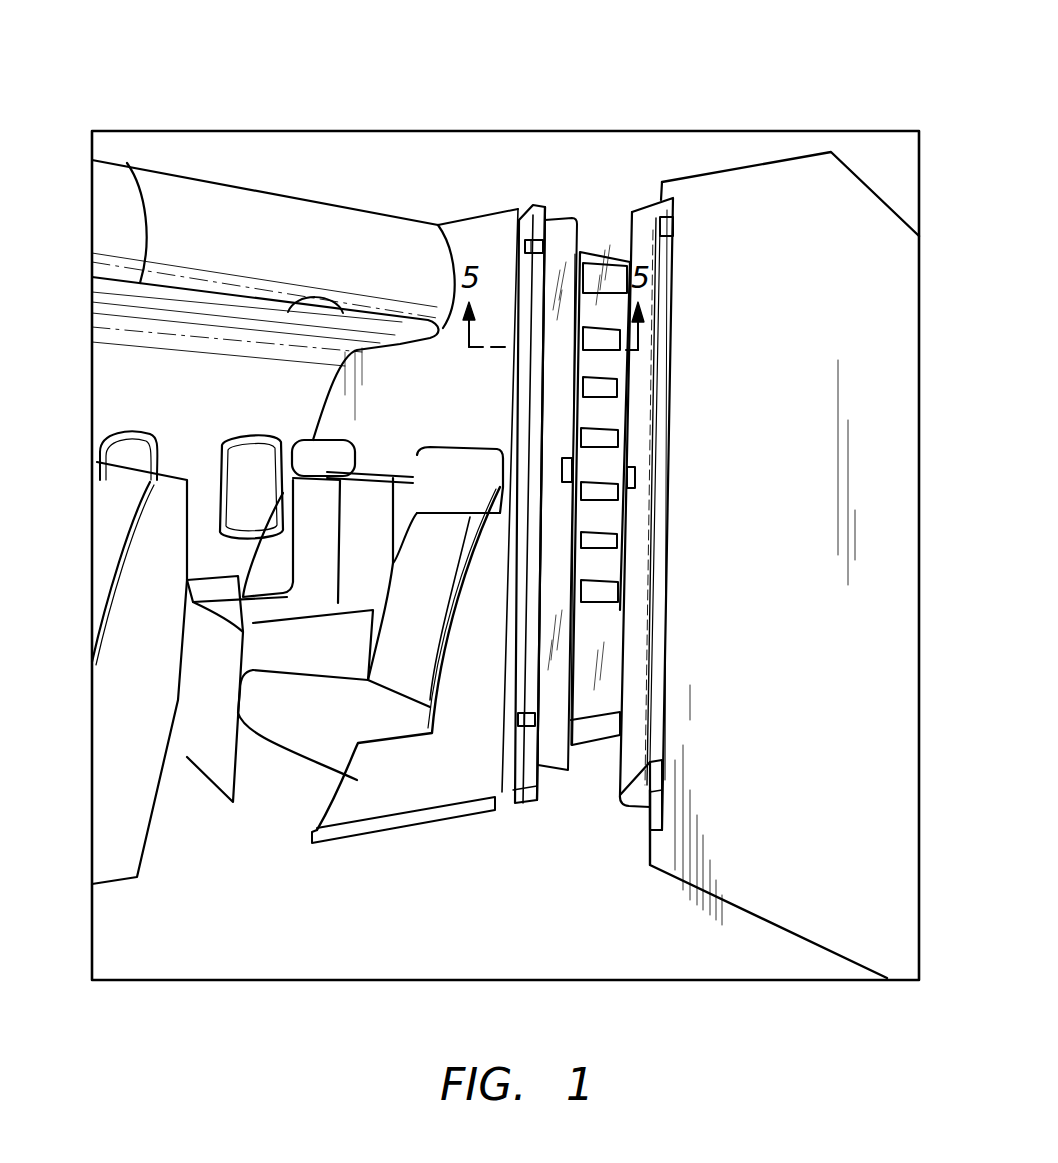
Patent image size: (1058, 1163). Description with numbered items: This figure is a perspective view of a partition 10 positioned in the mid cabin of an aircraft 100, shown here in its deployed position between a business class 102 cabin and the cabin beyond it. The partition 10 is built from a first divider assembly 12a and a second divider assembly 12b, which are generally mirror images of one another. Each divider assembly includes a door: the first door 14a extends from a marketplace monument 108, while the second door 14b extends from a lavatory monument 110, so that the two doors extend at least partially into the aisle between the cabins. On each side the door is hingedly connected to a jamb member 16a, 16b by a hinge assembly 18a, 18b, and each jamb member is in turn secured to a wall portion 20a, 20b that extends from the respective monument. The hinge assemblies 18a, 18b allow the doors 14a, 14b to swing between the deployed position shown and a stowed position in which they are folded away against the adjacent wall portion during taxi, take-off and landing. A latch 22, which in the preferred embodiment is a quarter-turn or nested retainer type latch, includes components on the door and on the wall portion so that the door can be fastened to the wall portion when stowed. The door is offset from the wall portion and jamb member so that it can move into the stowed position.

The aircraft 100 is at (416, 158).
The business class 102 is at (422, 912).
The marketplace monument 108 is at (495, 228).
The lavatory monument 110 is at (793, 387).
The partition 10 is at (702, 247).
The first divider assembly 12a is at (516, 373).
The second divider assembly 12b is at (681, 583).
The first door 14a is at (549, 750).
The second door 14b is at (640, 514).
The jamb member 16a is at (533, 412).
The jamb member 16b is at (660, 640).
The hinge assembly 18a is at (543, 247).
The hinge assembly 18b is at (666, 228).
The wall portion 20a is at (514, 782).
The wall portion 20b is at (677, 663).
The latch 22 is at (640, 482).